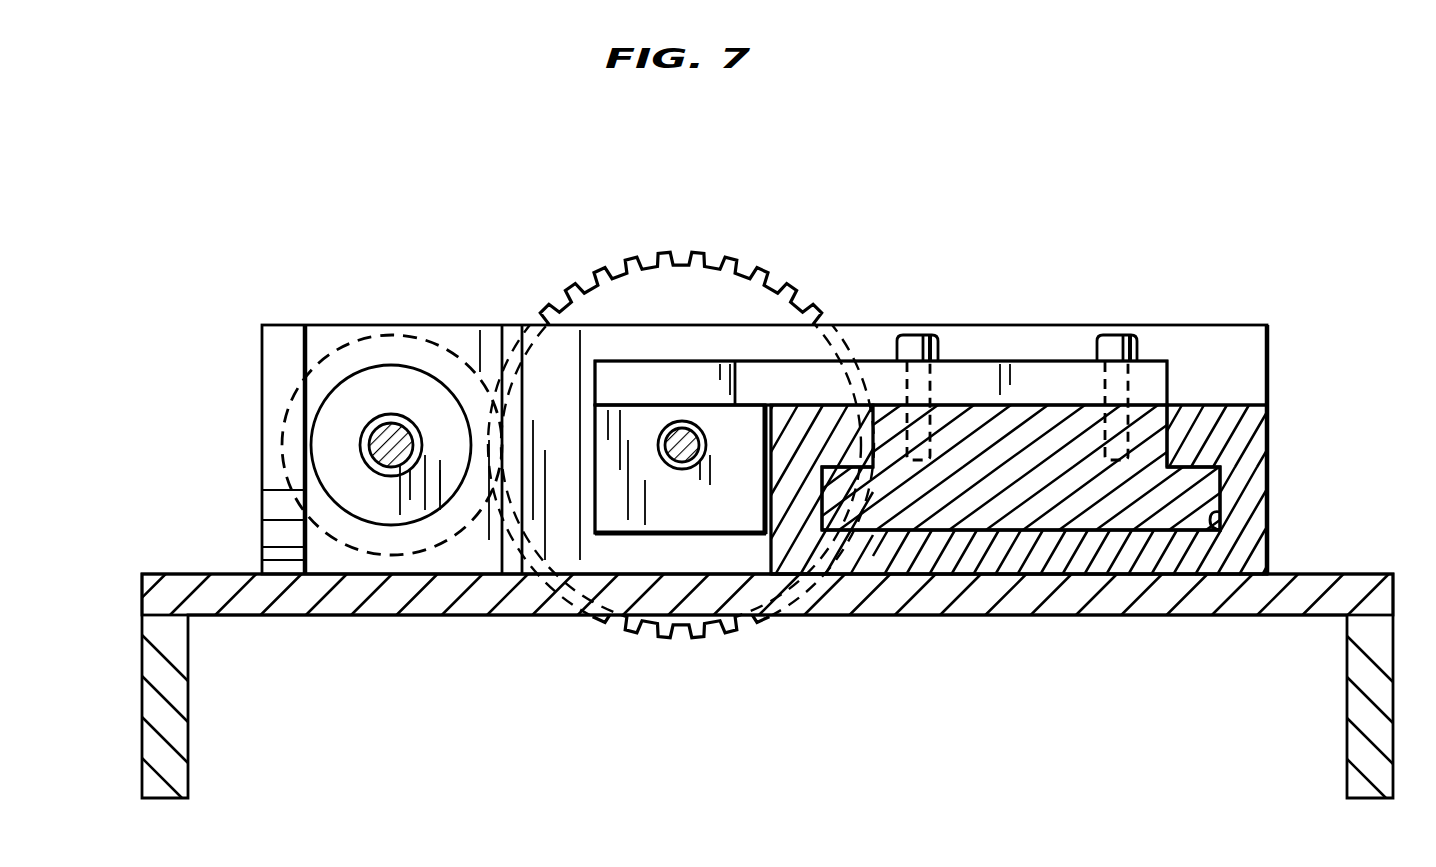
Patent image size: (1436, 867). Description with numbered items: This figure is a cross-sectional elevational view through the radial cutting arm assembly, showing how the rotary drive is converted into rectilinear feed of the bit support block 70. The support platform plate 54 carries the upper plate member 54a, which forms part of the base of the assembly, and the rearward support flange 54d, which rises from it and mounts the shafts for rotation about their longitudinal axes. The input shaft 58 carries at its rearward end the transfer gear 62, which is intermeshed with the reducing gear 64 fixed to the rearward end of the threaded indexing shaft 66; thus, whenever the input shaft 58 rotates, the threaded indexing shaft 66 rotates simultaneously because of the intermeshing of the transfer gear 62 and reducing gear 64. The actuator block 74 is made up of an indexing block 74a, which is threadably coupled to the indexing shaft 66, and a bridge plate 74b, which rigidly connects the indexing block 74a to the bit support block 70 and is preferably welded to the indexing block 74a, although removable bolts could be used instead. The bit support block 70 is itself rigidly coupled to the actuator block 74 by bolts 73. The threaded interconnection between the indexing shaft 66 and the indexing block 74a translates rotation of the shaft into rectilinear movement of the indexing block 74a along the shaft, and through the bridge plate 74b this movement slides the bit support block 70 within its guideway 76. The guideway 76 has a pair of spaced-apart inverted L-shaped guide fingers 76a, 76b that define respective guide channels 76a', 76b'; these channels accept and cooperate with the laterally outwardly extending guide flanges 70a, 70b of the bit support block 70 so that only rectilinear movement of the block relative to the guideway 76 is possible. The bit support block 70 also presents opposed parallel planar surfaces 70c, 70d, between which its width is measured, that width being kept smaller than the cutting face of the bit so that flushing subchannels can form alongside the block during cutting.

The support platform plate 54 is at (150, 700).
The upper plate member 54a is at (413, 606).
The rearward support flange 54d is at (500, 564).
The input shaft 58 is at (398, 438).
The transfer gear 62 is at (394, 335).
The reducing gear 64 is at (738, 262).
The threaded indexing shaft 66 is at (682, 421).
The bit support block 70 is at (1030, 487).
The guide flange 70a is at (838, 490).
The guide flange 70b is at (1210, 487).
The parallel planar surface 70c is at (1150, 403).
The parallel planar surface 70d is at (1062, 530).
The bolts 73 is at (1095, 345).
The actuator block 74 is at (590, 403).
The indexing block 74a is at (713, 517).
The bridge plate 74b is at (823, 397).
The guideway 76 is at (1250, 455).
The guide finger 76a is at (836, 423).
The guide channel 76a' is at (835, 594).
The guide finger 76b is at (1255, 389).
The guide channel 76b' is at (1282, 535).